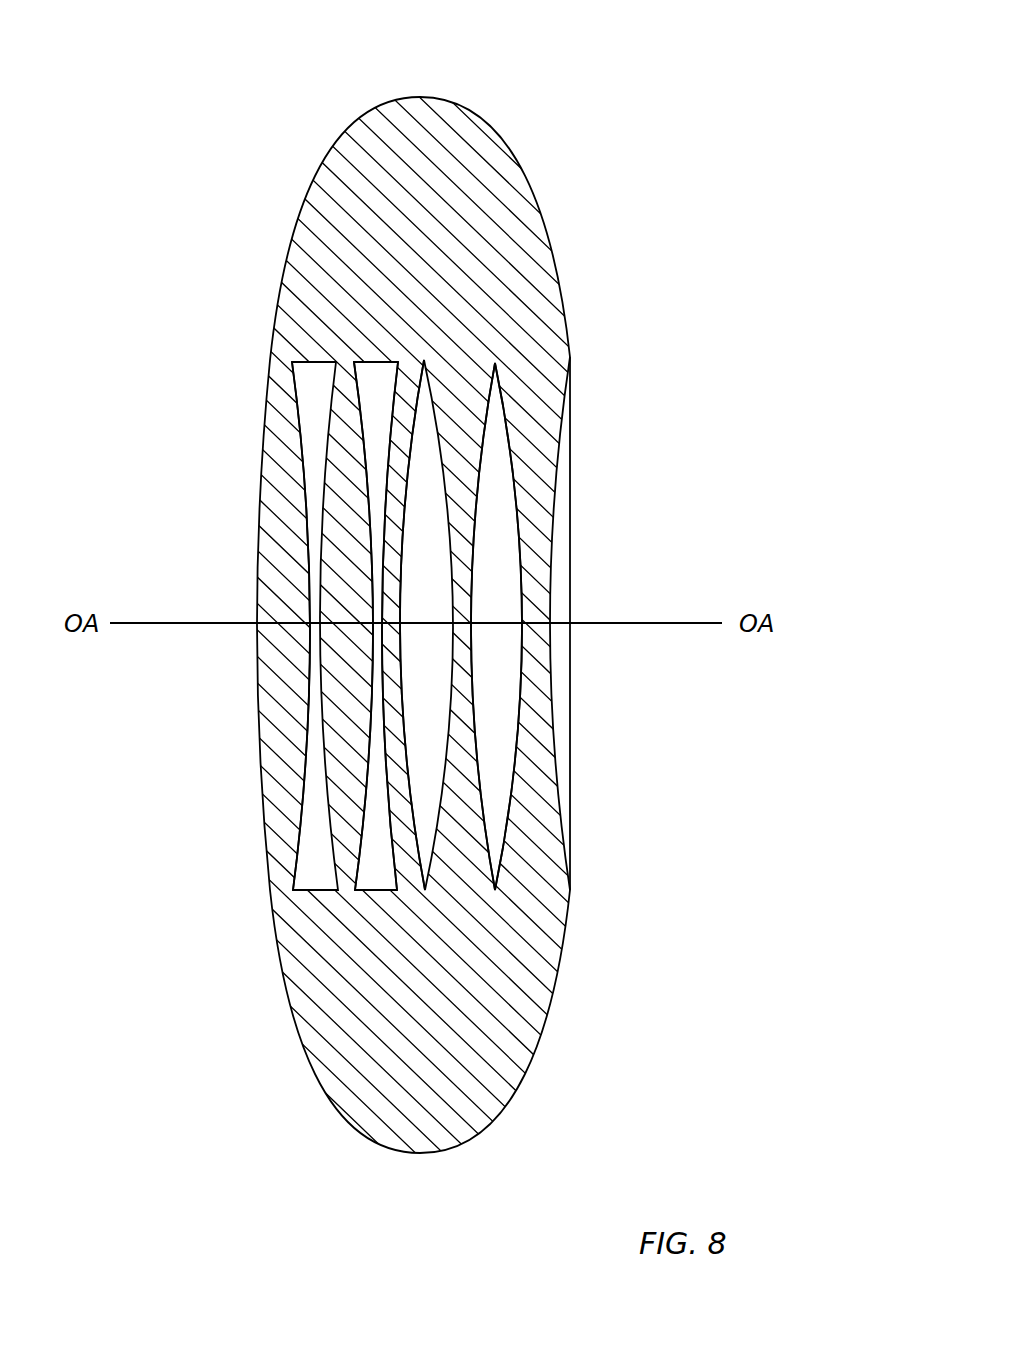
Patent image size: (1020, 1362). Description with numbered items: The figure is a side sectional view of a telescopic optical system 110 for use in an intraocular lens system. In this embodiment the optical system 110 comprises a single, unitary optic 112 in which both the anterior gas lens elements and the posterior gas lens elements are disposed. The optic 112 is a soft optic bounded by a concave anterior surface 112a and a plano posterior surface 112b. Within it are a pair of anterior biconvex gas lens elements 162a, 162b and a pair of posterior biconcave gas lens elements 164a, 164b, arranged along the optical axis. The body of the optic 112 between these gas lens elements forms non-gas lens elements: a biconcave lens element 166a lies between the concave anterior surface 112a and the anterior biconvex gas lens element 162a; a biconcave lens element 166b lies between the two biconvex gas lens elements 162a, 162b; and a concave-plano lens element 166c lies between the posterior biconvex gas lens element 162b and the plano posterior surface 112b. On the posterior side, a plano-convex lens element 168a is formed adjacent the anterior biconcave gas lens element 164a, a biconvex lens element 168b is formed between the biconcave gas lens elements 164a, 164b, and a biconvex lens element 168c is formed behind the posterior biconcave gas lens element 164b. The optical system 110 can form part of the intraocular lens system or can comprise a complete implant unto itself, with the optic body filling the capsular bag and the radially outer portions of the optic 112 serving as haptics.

The optical system 110 is at (560, 123).
The optic 112 is at (528, 230).
The concave anterior surface 112a is at (553, 483).
The plano posterior surface 112b is at (263, 447).
The anterior biconvex gas lens element 162a is at (494, 438).
The posterior biconvex gas lens element 162b is at (423, 428).
The anterior biconcave gas lens element 164a is at (383, 383).
The posterior biconcave gas lens element 164b is at (312, 377).
The biconcave lens element 166a is at (535, 525).
The biconcave lens element 166b is at (457, 553).
The concave-plano lens element 166c is at (393, 725).
The plano-convex lens element 168a is at (390, 626).
The biconvex lens element 168b is at (342, 727).
The biconvex lens element 168c is at (275, 793).